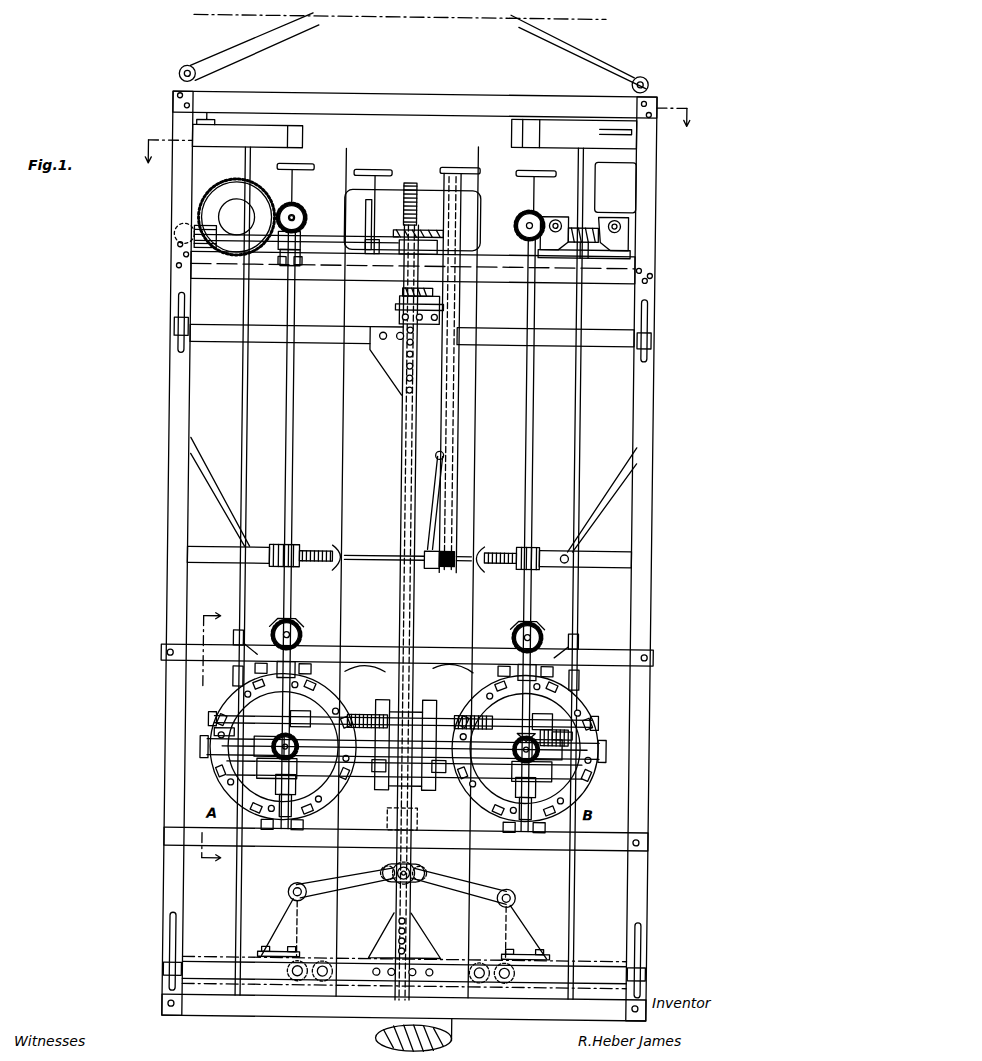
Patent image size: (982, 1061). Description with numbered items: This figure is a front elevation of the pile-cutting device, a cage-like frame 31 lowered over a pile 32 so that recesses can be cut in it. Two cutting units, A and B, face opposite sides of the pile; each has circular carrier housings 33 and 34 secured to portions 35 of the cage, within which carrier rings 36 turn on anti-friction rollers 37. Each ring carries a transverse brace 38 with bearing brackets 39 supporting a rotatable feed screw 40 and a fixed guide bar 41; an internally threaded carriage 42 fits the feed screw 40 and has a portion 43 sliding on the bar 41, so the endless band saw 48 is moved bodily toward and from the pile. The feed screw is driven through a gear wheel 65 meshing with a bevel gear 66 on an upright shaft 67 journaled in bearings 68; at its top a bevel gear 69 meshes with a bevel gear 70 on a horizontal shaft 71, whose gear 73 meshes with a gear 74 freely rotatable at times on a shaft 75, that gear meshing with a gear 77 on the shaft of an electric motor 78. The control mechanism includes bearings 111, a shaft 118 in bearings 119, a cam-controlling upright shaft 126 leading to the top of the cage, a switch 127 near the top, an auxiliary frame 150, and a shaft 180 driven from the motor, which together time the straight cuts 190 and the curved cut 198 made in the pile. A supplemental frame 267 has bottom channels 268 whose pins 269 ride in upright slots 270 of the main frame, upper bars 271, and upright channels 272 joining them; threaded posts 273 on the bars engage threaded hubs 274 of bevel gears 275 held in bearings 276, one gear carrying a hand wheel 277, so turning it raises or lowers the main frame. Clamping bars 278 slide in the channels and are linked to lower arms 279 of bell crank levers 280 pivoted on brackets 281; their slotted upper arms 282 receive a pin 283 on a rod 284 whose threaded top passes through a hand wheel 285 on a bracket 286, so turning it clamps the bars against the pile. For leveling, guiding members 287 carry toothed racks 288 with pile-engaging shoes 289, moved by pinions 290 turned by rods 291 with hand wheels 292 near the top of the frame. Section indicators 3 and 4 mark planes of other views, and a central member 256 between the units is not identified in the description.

The section line 3 is at (416, 146).
The section line 4 is at (220, 745).
The frame 31 is at (482, 95).
The pile 32 is at (470, 498).
The carrier housing 33 is at (220, 764).
The carrier housing 34 is at (234, 790).
The portions of the cage 35 is at (317, 648).
The carrier ring 36 is at (554, 730).
The anti-friction roller 37 is at (593, 713).
The transverse brace 38 is at (322, 763).
The bearing bracket 39 is at (606, 782).
The feed screw 40 is at (372, 716).
The guide bar 41 is at (264, 778).
The carriage 42 is at (258, 750).
The portion of the carriage 43 is at (545, 798).
The band saw 48 is at (288, 790).
The gear wheel 65 is at (306, 746).
The bevel gear 66 is at (262, 745).
The upright shaft 67 is at (298, 598).
The bearing 68 is at (283, 258).
The bevel gear 69 is at (303, 238).
The bevel gear 70 is at (306, 213).
The horizontal shaft 71 is at (297, 216).
The gear 73 is at (519, 223).
The gear wheel 74 is at (566, 254).
The shaft 75 is at (557, 218).
The gear 77 is at (583, 256).
The electric motor 78 is at (236, 216).
The bearing 111 is at (240, 641).
The shaft 118 is at (407, 649).
The bearing 119 is at (421, 661).
The cam-controlling upright shaft 126 is at (252, 497).
The switch 127 is at (207, 125).
The auxiliary frame 150 is at (196, 186).
The shaft 180 is at (616, 218).
The straight cut 190 is at (352, 656).
The curved cut 198 is at (395, 700).
The central guide box 256 is at (388, 800).
The supplemental frame 267 is at (212, 326).
The bottom channel 268 is at (226, 968).
The pin 269 is at (174, 972).
The upright slot 270 is at (180, 935).
The upper bar 271 is at (322, 345).
The upright channel 272 is at (406, 456).
The screw threaded post 273 is at (406, 296).
The internally screw threaded hub 274 is at (418, 238).
The bevel gear 275 is at (390, 226).
The bearing 276 is at (397, 258).
The hand wheel 277 is at (420, 210).
The clamping bar 278 is at (360, 966).
The lower arm 279 is at (290, 912).
The bell crank lever 280 is at (335, 890).
The bracket 281 is at (290, 918).
The upper arm 282 is at (380, 892).
The pin 283 is at (340, 892).
The rod 284 is at (402, 310).
The hand wheel 285 is at (432, 308).
The bracket 286 is at (404, 366).
The guiding member 287 is at (405, 557).
The toothed rack 288 is at (321, 551).
The pile-engaging shoe 289 is at (346, 551).
The pinion 290 is at (281, 568).
The rod 291 is at (345, 180).
The hand wheel 292 is at (297, 168).